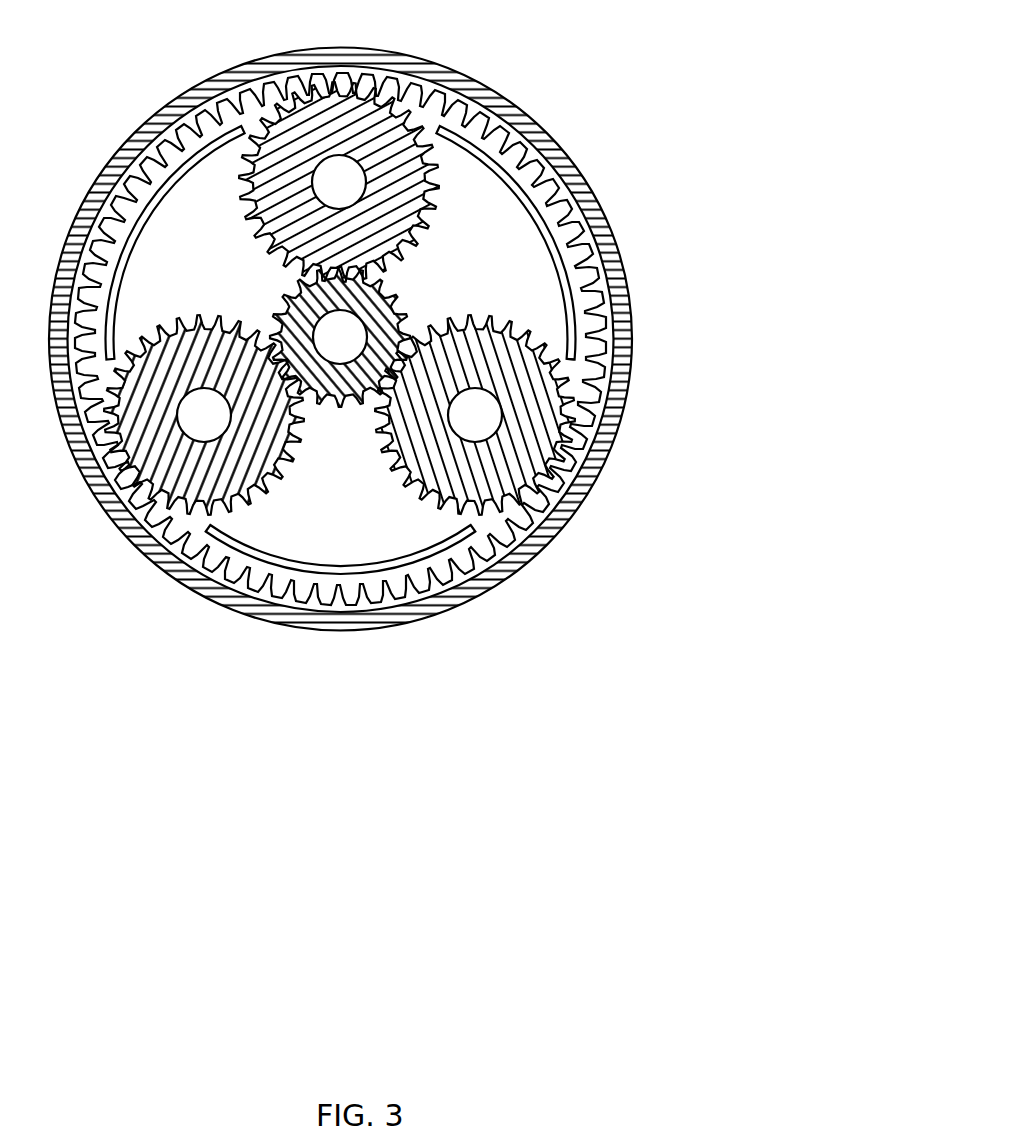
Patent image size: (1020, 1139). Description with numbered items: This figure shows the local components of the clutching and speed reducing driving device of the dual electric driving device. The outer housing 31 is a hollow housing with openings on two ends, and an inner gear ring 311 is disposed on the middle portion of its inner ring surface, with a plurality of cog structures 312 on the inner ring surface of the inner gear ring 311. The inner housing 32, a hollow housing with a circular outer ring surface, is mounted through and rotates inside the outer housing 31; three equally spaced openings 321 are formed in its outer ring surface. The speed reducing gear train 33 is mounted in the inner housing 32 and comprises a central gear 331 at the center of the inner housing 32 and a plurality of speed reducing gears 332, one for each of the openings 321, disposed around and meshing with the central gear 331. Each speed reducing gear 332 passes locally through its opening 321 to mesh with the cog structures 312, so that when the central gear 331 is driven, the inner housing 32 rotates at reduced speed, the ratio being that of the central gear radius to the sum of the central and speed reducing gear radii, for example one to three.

The outer housing 31 is at (578, 490).
The inner gear ring 311 is at (596, 430).
The cog structures 312 is at (602, 363).
The inner housing 32 is at (575, 315).
The openings 321 is at (582, 350).
The speed reducing gear train 33 is at (432, 316).
The central gear 331 is at (380, 320).
The speed reducing gears 332 is at (503, 503).